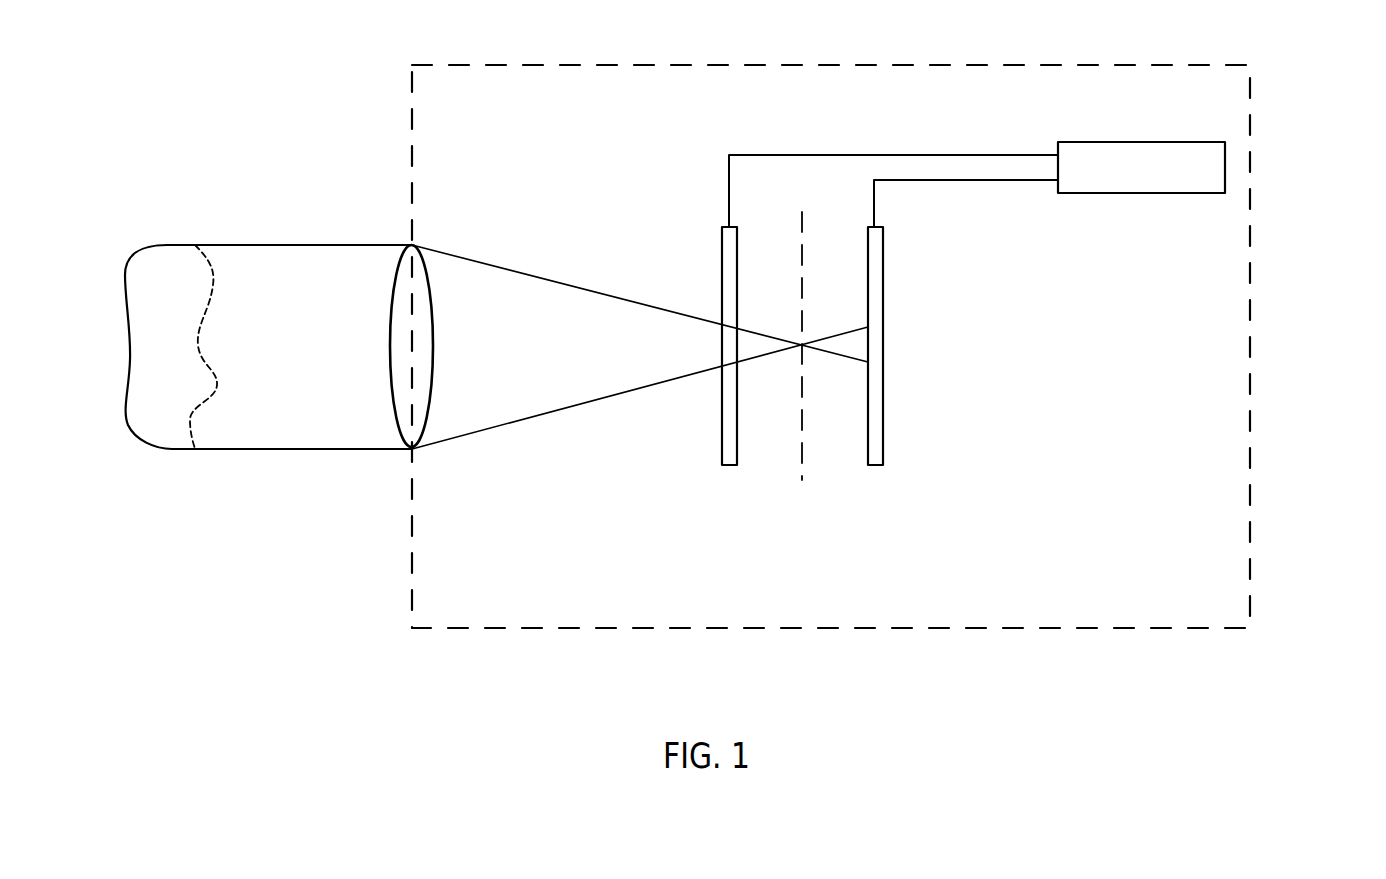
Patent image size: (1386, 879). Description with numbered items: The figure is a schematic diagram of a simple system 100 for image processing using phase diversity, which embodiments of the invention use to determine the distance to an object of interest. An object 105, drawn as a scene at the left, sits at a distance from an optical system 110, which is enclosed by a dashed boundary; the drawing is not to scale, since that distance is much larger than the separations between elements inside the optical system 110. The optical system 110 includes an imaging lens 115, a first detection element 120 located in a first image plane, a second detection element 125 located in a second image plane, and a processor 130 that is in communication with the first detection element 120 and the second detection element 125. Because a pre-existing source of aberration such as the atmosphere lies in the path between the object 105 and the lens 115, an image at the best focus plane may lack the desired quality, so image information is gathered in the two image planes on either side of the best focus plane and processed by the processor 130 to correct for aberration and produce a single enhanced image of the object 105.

The system 100 is at (232, 149).
The object 105 is at (159, 277).
The optical system 110 is at (1257, 224).
The imaging lens 115 is at (433, 320).
The first detection element 120 is at (722, 242).
The second detection element 125 is at (883, 245).
The processor 130 is at (1197, 142).